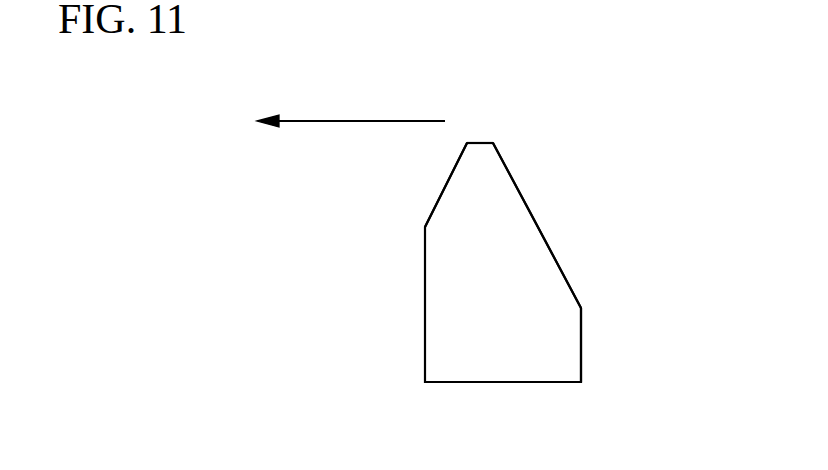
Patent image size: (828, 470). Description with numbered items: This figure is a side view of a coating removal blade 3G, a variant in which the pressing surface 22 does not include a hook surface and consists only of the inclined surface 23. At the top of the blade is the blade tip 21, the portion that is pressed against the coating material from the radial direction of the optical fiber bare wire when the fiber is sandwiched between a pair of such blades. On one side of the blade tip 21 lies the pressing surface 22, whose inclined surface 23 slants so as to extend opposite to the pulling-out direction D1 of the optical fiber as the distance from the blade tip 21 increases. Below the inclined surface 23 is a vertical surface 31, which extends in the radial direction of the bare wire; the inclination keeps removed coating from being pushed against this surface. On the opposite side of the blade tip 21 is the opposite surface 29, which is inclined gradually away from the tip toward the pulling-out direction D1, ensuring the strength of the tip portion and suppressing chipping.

The pulling-out direction D1 is at (334, 121).
The coating removal blade 3G is at (405, 333).
The blade tip 21 is at (479, 142).
The opposite surface 29 is at (446, 185).
The pressing surface 22 is at (517, 186).
The inclined surface 23 is at (545, 237).
The vertical surface 31 is at (581, 344).